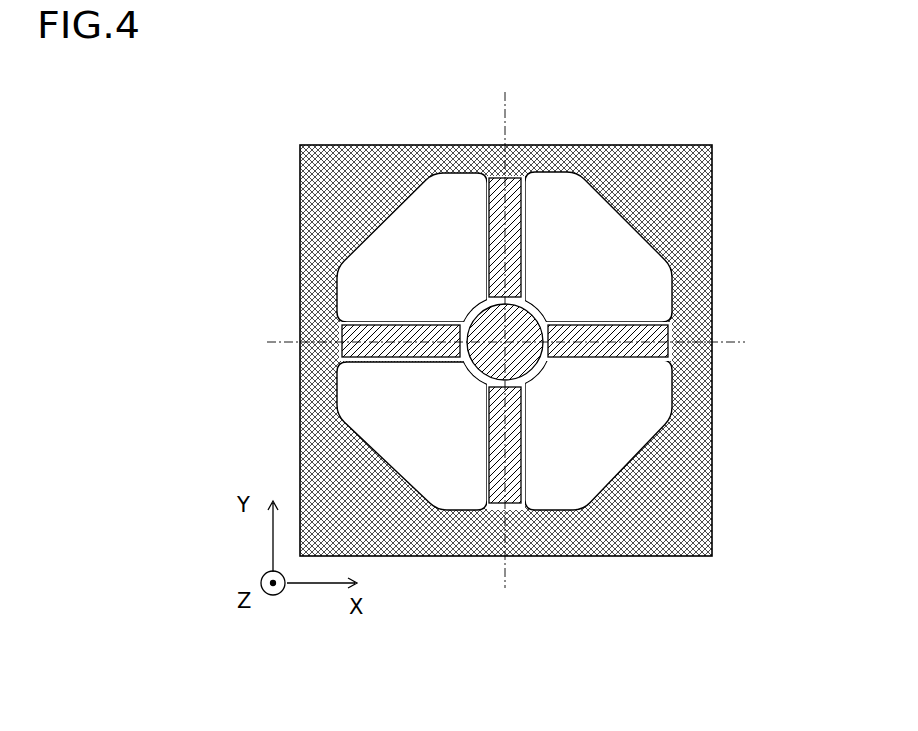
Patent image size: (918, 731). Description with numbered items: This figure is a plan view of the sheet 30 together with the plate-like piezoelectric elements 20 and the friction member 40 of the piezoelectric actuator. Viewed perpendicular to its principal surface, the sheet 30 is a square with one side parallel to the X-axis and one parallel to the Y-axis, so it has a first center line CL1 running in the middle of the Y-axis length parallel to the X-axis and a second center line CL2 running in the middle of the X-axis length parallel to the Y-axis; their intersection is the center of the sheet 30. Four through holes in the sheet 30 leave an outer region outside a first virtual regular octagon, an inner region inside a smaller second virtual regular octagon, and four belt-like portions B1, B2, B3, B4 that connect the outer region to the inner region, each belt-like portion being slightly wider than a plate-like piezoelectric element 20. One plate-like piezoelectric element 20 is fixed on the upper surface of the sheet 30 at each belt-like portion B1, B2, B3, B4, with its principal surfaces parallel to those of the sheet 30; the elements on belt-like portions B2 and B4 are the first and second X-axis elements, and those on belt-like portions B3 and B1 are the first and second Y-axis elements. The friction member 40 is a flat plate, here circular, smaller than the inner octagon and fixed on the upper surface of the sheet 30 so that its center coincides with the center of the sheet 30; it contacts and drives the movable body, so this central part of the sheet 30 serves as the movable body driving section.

The plate-like piezoelectric element 20 is at (508, 355).
The sheet 30 is at (712, 198).
The friction member 40 is at (541, 312).
The belt-like portion B1 is at (523, 250).
The belt-like portion B2 is at (388, 326).
The belt-like portion B3 is at (489, 447).
The belt-like portion B4 is at (580, 358).
The first center line CL1 is at (526, 343).
The second center line CL2 is at (502, 327).